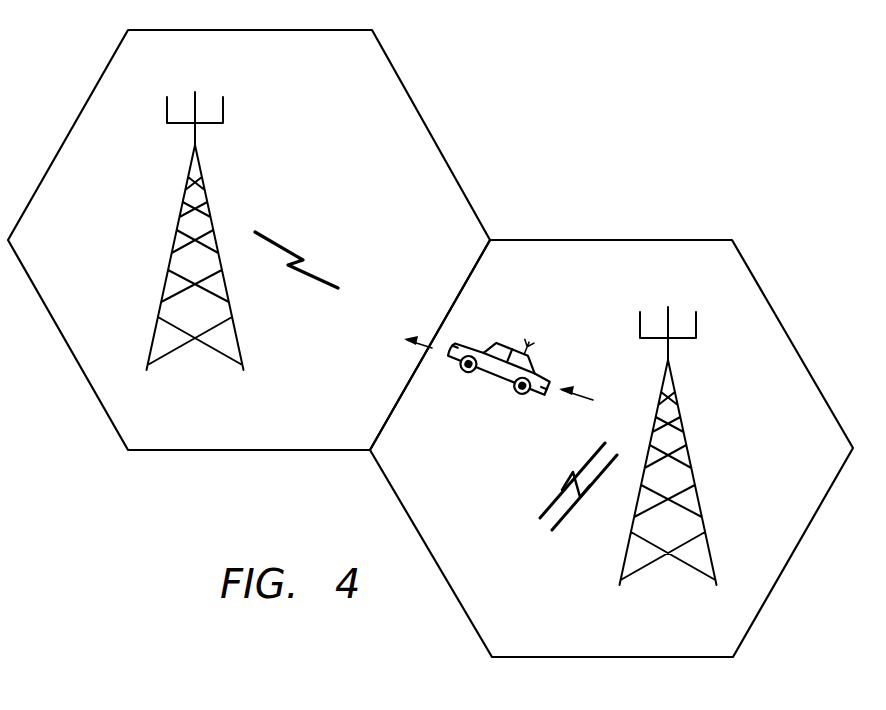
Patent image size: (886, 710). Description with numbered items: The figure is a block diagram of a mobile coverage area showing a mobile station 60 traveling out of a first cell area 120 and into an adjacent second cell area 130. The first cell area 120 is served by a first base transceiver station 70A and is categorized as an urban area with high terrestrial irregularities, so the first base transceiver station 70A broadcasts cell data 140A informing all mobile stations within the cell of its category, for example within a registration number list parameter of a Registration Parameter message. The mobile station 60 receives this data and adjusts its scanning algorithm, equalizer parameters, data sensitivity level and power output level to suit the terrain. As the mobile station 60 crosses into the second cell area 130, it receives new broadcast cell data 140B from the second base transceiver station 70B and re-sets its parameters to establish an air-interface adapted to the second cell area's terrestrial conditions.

The second cell area 130 is at (405, 87).
The first cell area 120 is at (642, 238).
The second base transceiver station 70B is at (167, 280).
The first base transceiver station 70A is at (698, 495).
The new broadcast cell data 140B is at (327, 222).
The RNUM message from first base station 140A is at (577, 517).
The mobile station 60 is at (490, 375).